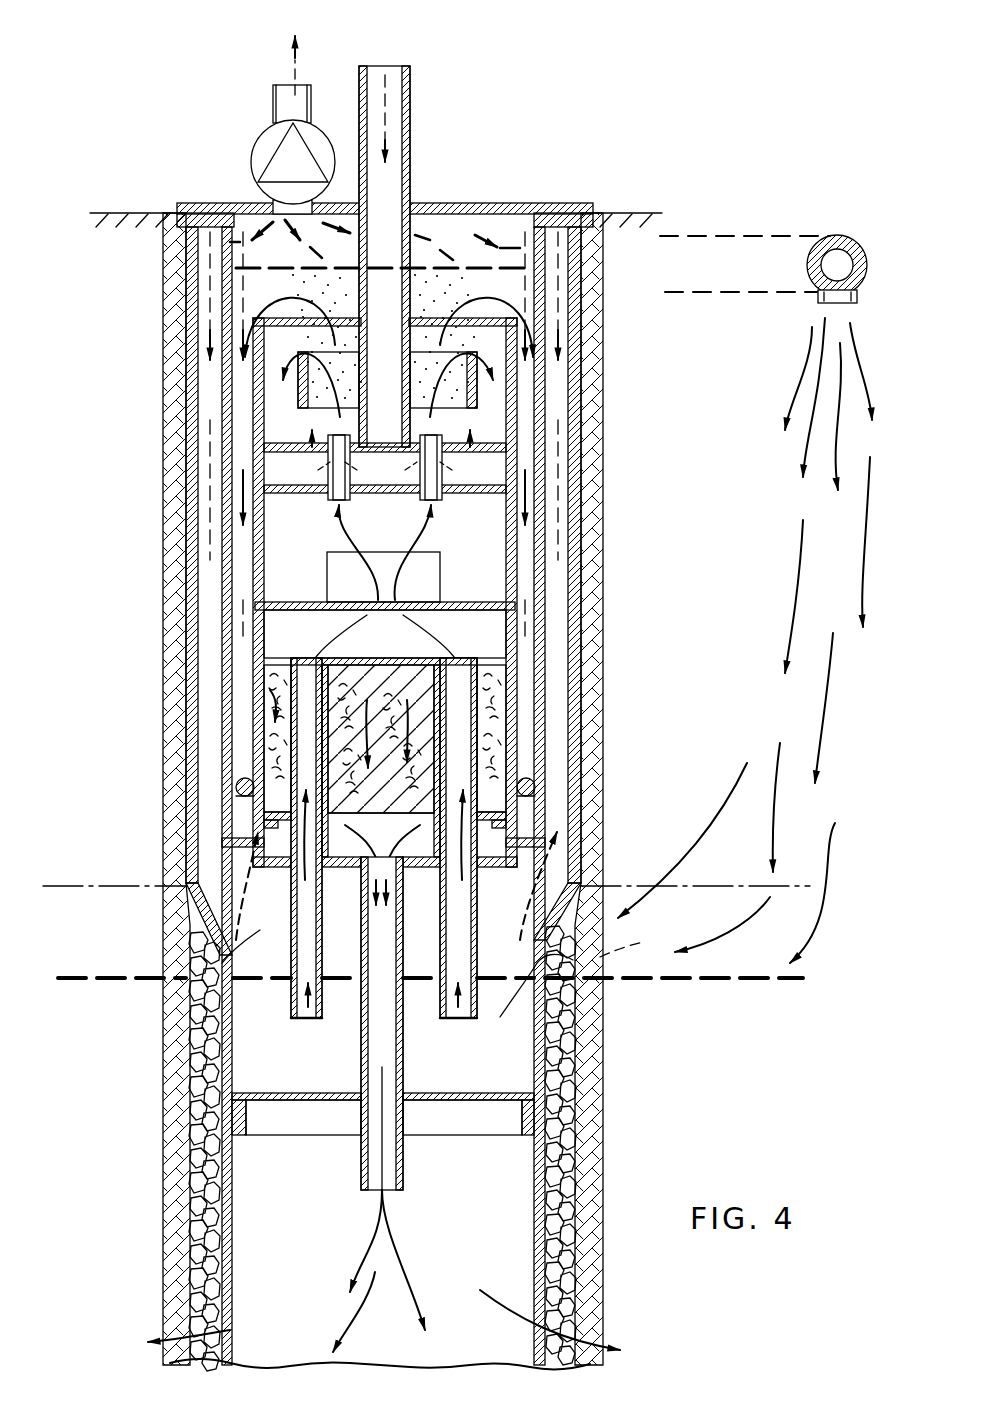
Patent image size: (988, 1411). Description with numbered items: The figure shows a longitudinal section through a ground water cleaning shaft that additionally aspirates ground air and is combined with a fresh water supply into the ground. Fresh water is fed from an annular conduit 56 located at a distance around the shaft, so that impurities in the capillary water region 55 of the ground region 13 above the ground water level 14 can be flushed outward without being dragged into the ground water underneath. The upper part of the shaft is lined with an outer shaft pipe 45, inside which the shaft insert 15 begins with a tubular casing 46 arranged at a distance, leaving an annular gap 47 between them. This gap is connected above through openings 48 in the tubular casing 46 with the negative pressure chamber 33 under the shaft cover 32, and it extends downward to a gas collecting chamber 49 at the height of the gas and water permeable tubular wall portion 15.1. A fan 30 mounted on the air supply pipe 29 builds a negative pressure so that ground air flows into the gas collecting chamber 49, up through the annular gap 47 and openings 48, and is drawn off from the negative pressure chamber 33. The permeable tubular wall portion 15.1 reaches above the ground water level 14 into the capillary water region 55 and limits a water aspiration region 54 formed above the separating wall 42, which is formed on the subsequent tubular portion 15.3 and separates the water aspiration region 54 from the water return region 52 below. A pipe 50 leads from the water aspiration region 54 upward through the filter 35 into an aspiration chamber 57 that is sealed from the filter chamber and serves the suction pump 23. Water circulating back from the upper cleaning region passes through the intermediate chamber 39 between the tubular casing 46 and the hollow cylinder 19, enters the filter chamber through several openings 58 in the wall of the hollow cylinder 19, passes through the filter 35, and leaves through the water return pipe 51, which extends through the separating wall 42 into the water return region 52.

The ground region 13 is at (714, 578).
The ground water level 14 is at (102, 972).
The shaft insert 15 is at (547, 410).
The permeable tubular wall portion 15.1 is at (583, 880).
The tubular portion 15.3 is at (220, 1118).
The hollow cylinder 19 is at (260, 533).
The suction pump 23 is at (420, 572).
The air supply pipe 29 is at (410, 90).
The fan 30 is at (257, 150).
The shaft cover 32 is at (540, 205).
The negative pressure chamber 33 is at (447, 233).
The filter 35 is at (405, 760).
The intermediate chamber 39 is at (242, 450).
The separating wall 42 is at (272, 1108).
The outer shaft pipe 45 is at (585, 490).
The tubular casing 46 is at (545, 555).
The annular gap 47 is at (556, 440).
The openings 48 is at (594, 232).
The gas collecting chamber 49 is at (217, 958).
The pipe 50 is at (453, 947).
The water return pipe 51 is at (405, 1035).
The water return region 52 is at (436, 1240).
The water aspiration region 54 is at (325, 1071).
The capillary water region 55 is at (691, 925).
The annular conduit 56 is at (833, 237).
The aspiration chamber 57 is at (480, 633).
The openings 58 is at (262, 697).